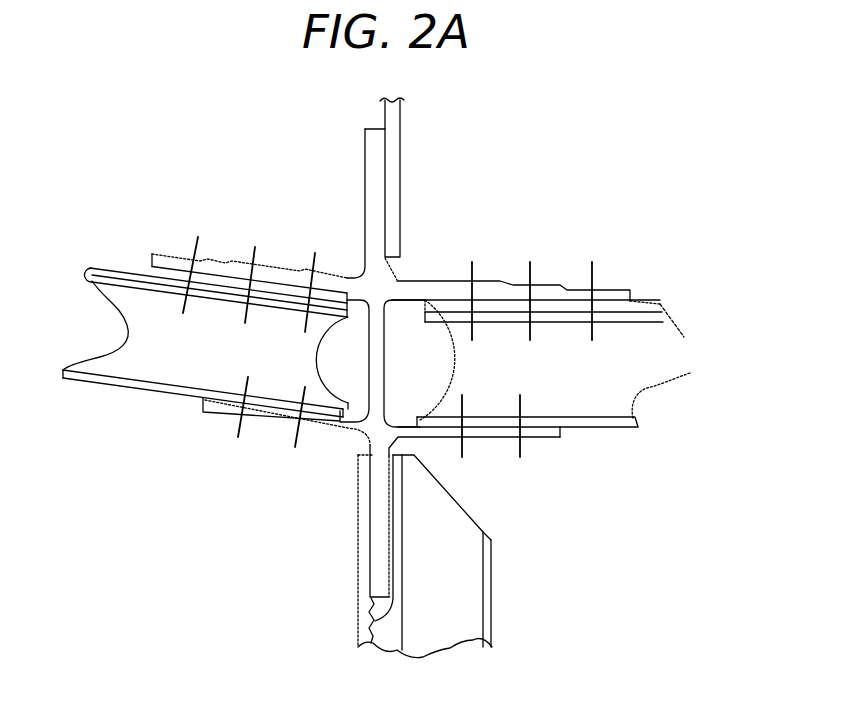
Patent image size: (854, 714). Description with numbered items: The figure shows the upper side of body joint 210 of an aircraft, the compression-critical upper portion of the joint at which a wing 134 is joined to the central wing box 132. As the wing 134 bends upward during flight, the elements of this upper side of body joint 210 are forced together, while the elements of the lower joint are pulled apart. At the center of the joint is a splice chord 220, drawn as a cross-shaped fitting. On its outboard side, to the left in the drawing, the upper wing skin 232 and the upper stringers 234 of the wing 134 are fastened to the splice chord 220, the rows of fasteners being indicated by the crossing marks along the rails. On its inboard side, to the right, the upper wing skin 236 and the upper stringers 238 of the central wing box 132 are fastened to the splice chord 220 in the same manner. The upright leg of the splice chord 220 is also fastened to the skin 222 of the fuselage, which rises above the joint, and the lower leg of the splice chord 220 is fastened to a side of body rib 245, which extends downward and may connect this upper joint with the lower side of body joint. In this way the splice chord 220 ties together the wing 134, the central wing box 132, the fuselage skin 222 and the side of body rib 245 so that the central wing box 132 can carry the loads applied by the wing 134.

The upper side of body joint 210 is at (545, 170).
The splice chord 220 is at (365, 168).
The skin 222 is at (399, 122).
The upper wing skin 232 is at (132, 263).
The upper stringers 234 is at (117, 313).
The wing 134 is at (142, 443).
The upper wing skin 236 is at (652, 298).
The upper stringers 238 is at (684, 340).
The central wing box 132 is at (670, 467).
The side of body rib 245 is at (487, 557).